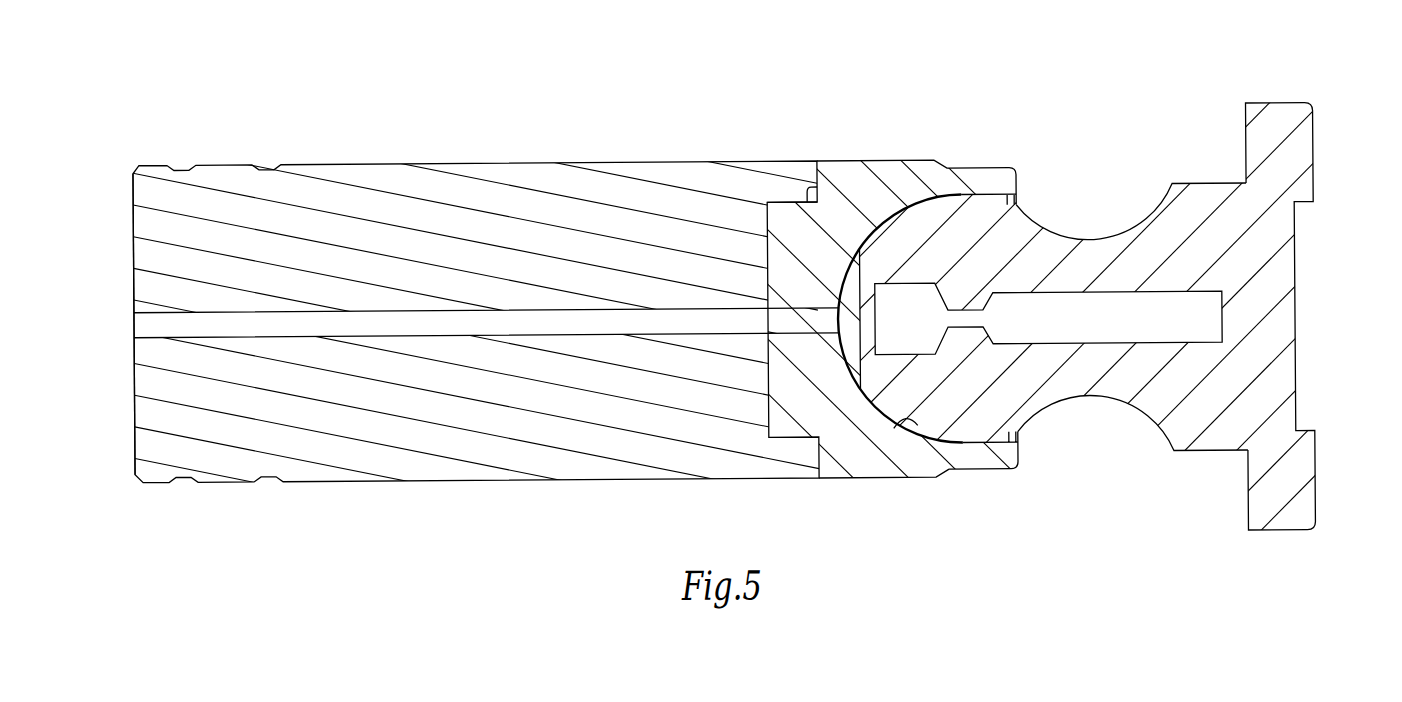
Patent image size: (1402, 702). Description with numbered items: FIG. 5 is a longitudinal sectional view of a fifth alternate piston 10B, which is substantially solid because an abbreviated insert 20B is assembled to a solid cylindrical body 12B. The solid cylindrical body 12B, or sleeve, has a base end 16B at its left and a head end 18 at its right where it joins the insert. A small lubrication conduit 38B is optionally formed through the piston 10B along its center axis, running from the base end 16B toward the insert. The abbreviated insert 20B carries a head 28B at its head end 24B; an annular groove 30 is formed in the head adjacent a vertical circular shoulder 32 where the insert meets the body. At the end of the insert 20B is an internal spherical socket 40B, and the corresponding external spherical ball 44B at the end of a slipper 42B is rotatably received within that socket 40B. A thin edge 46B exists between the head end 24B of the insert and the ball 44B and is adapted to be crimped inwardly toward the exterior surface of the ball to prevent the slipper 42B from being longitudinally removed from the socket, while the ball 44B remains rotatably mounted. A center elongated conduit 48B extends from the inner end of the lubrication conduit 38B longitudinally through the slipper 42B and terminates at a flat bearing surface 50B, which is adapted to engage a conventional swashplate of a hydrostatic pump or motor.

The piston 10B is at (731, 310).
The solid cylindrical body 12B is at (459, 320).
The base end 16B is at (134, 212).
The lubrication conduit 38B is at (142, 324).
The annular groove 30 is at (786, 200).
The vertical circular shoulder 32 is at (812, 160).
The head end 18 is at (871, 354).
The head 28B is at (938, 479).
The internal spherical socket 40B is at (895, 418).
The abbreviated insert 20B is at (936, 319).
The head end of insert 24B is at (1008, 172).
The thin edge 46B is at (1012, 214).
The external spherical ball 44B is at (1019, 445).
The slipper 42B is at (1127, 232).
The center elongated conduit 48B is at (1124, 294).
The flat bearing surface 50B is at (1315, 130).